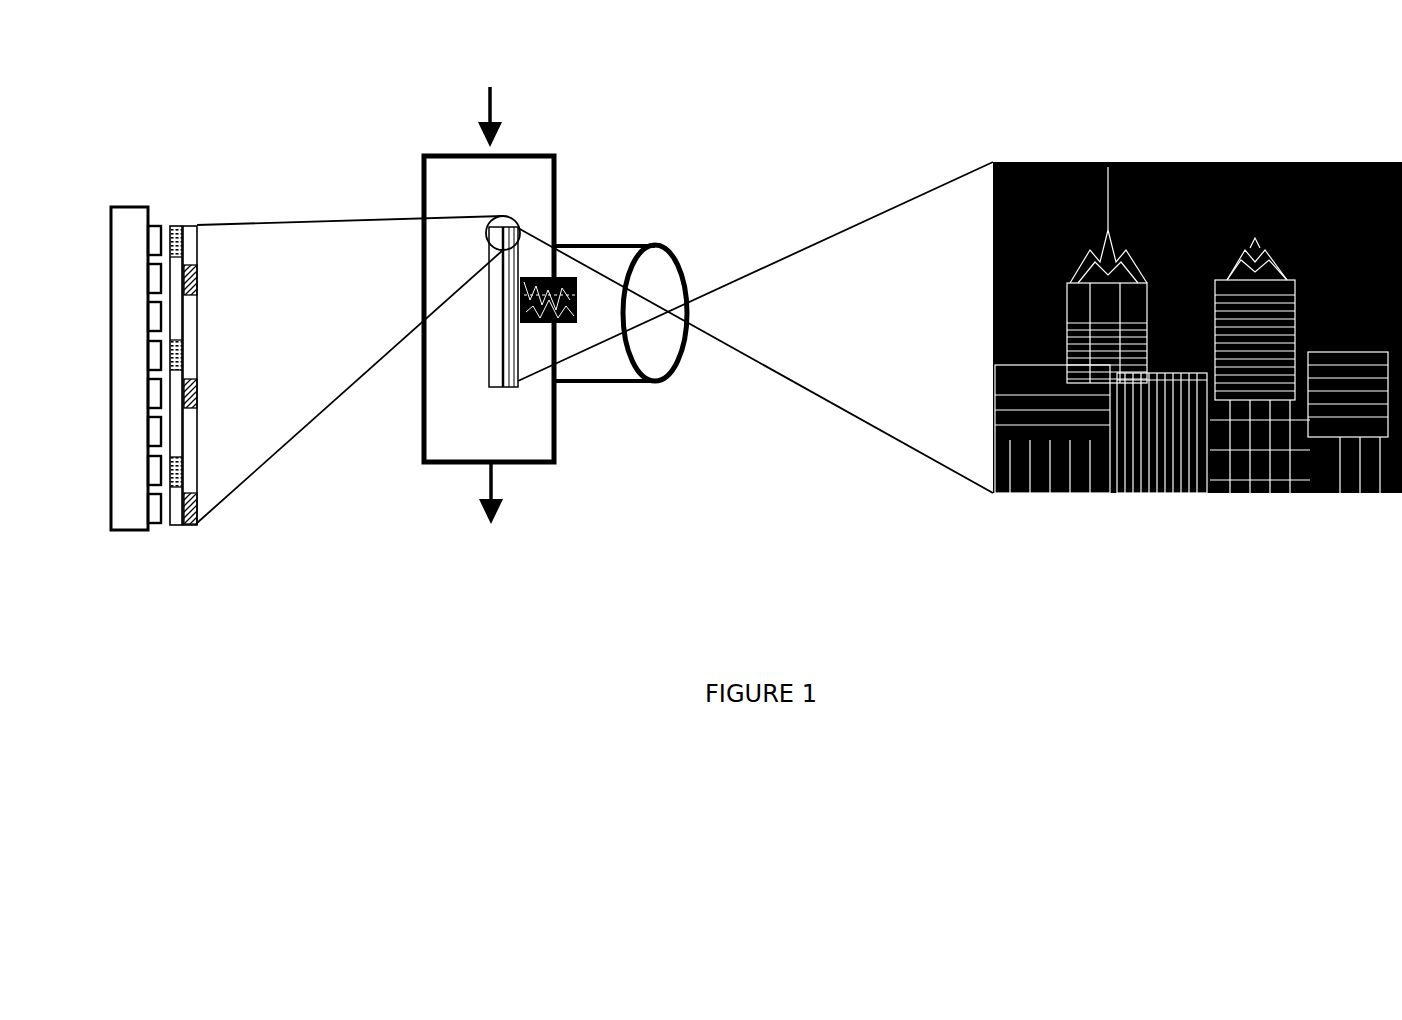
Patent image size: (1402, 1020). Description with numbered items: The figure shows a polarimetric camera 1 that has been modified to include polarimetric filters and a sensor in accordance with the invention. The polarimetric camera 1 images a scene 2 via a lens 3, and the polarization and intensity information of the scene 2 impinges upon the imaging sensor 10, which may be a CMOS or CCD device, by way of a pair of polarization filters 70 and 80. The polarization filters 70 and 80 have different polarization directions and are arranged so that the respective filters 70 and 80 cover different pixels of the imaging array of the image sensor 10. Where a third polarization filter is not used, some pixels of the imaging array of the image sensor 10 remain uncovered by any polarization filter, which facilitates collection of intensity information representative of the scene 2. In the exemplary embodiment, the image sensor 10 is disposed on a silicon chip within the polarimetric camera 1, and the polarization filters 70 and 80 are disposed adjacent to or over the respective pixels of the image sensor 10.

The polarimetric camera 1 is at (494, 316).
The scene 2 is at (1052, 493).
The lens 3 is at (613, 222).
The imaging sensor 10 is at (128, 522).
The polarization filter 70 is at (173, 522).
The polarization filter 80 is at (192, 522).